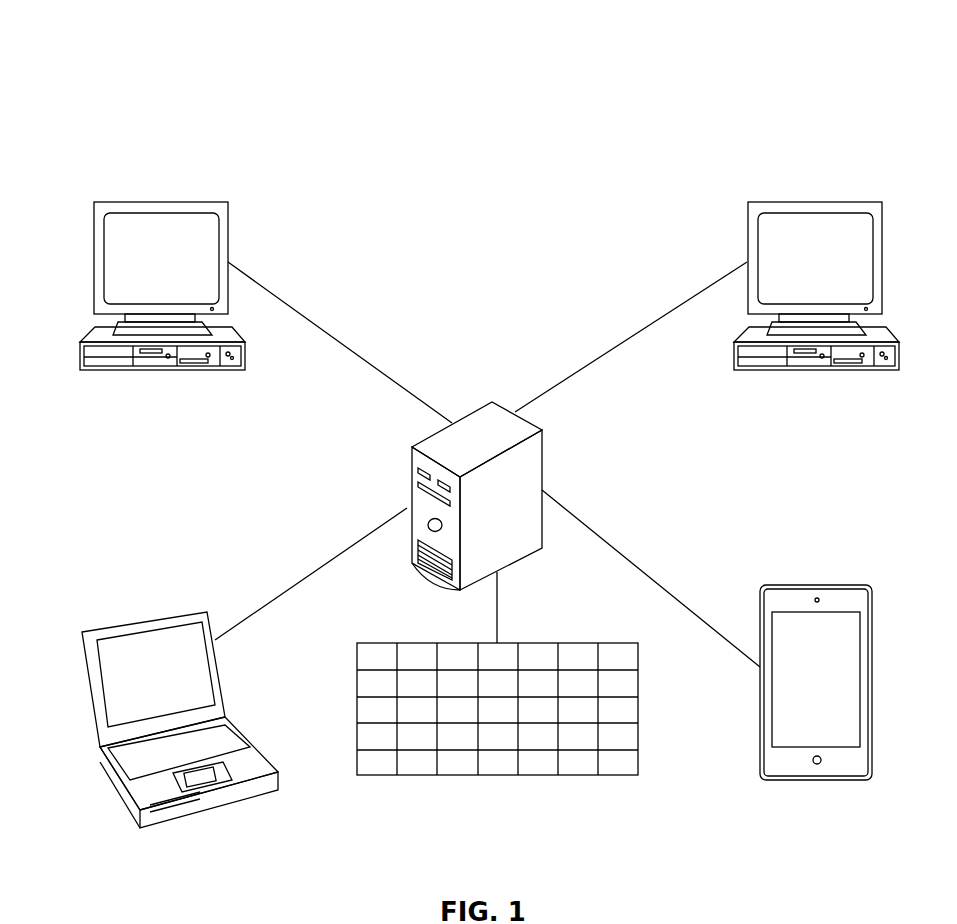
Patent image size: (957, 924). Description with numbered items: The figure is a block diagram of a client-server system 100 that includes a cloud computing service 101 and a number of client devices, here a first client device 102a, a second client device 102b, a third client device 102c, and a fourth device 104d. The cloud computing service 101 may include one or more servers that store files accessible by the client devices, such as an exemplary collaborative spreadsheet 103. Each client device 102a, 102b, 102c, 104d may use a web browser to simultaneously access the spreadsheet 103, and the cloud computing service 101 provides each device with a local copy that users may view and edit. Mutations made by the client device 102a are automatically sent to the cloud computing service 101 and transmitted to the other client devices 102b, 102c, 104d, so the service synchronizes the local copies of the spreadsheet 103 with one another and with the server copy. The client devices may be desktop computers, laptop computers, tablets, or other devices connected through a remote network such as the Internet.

The client-server system 100 is at (118, 50).
The cloud computing service 101 is at (480, 408).
The client device 102a is at (183, 202).
The client device 102b is at (815, 202).
The client device 102c is at (143, 622).
The collaborative spreadsheet 103 is at (437, 643).
The mobile device / tablet 104d is at (817, 585).